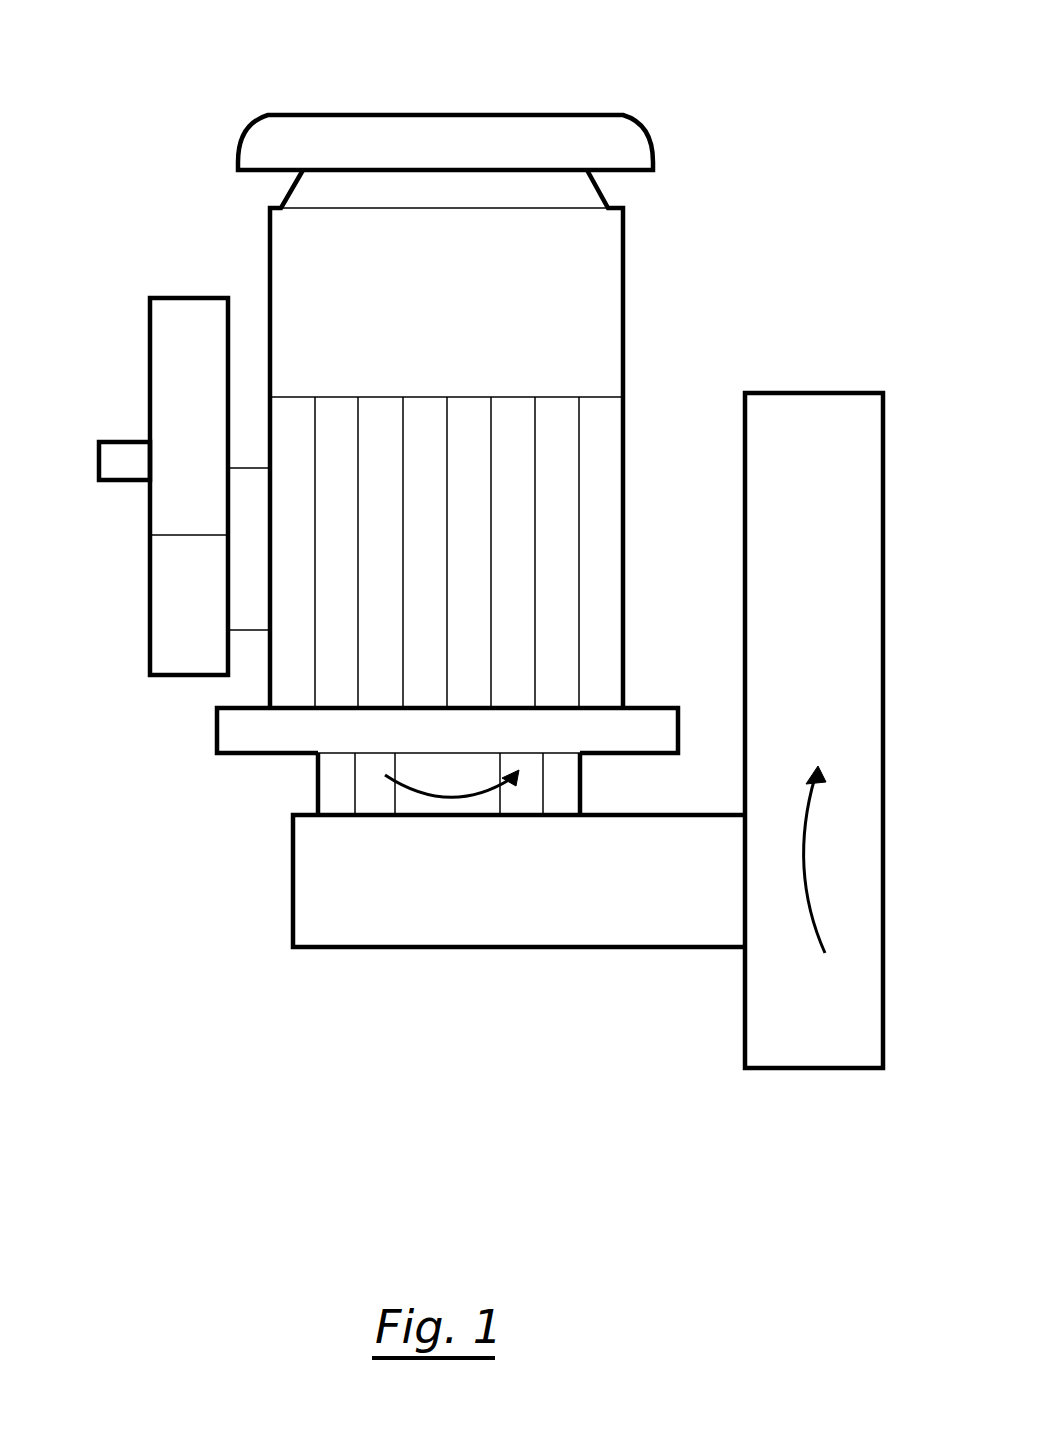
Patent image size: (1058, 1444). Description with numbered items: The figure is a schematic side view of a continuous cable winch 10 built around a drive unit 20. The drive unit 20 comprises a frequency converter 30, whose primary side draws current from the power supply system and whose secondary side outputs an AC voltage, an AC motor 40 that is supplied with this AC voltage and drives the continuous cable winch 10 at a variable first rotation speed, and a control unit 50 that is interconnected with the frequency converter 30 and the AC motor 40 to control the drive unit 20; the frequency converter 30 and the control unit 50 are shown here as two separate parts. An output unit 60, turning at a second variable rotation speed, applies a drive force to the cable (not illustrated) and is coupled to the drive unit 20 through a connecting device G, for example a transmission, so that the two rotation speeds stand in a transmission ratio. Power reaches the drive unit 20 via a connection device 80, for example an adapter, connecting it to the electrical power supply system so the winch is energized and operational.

The continuous cable winch 10 is at (757, 120).
The drive unit 20 is at (188, 209).
The frequency converter 30 is at (180, 370).
The AC motor 40 is at (607, 382).
The control unit 50 is at (177, 625).
The output unit 60 is at (815, 430).
The connection device 80 is at (133, 462).
The connecting device G is at (348, 907).